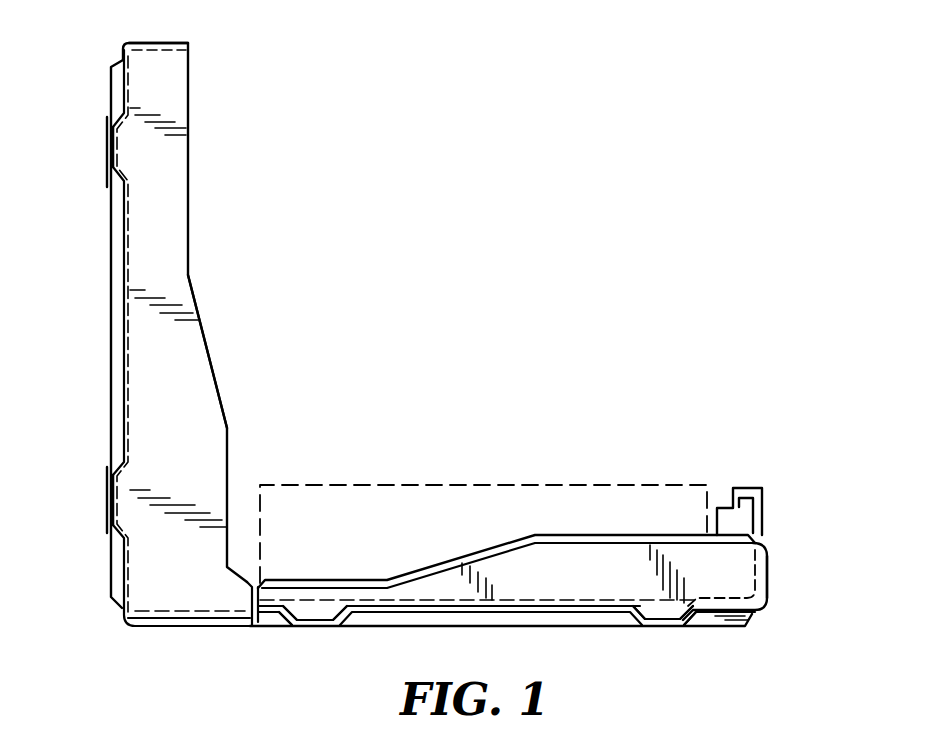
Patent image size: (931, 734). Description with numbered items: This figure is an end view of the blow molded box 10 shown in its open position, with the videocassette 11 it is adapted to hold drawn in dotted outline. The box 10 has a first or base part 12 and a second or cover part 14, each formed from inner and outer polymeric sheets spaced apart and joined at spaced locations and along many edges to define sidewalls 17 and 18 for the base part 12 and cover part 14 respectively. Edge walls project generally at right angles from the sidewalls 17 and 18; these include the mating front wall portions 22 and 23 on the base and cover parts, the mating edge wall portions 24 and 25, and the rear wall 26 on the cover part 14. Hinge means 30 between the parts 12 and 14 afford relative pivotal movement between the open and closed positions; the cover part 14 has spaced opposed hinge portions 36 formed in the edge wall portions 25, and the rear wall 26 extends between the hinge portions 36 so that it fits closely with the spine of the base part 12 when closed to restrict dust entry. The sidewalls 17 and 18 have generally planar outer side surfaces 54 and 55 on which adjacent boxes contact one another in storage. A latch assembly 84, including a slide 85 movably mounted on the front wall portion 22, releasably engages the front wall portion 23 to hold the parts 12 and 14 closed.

The box 10 is at (108, 647).
The videocassette 11 is at (616, 482).
The base part 12 is at (782, 556).
The cover part 14 is at (198, 110).
The sidewall 17 is at (386, 628).
The sidewall 18 is at (111, 297).
The front wall portion 22 is at (769, 585).
The front wall portion 23 is at (145, 42).
The edge wall portion 24 is at (600, 596).
The edge wall portion 25 is at (138, 345).
The rear wall 26 is at (147, 628).
The hinge means 30 is at (253, 640).
The hinge portions 36 is at (232, 612).
The outer side surface 54 is at (505, 628).
The outer side surface 55 is at (111, 392).
The latch assembly 84 is at (755, 475).
The slide 85 is at (766, 492).